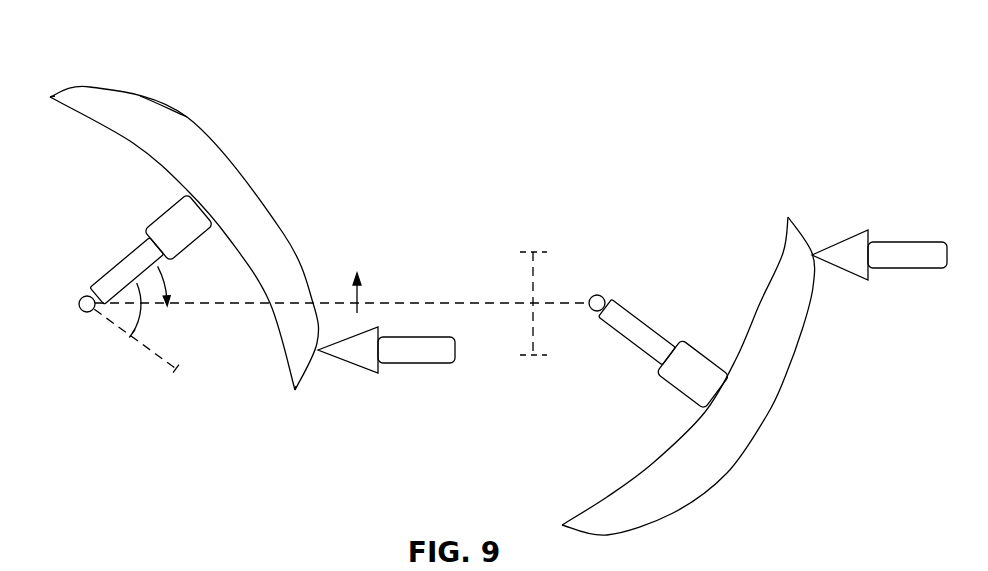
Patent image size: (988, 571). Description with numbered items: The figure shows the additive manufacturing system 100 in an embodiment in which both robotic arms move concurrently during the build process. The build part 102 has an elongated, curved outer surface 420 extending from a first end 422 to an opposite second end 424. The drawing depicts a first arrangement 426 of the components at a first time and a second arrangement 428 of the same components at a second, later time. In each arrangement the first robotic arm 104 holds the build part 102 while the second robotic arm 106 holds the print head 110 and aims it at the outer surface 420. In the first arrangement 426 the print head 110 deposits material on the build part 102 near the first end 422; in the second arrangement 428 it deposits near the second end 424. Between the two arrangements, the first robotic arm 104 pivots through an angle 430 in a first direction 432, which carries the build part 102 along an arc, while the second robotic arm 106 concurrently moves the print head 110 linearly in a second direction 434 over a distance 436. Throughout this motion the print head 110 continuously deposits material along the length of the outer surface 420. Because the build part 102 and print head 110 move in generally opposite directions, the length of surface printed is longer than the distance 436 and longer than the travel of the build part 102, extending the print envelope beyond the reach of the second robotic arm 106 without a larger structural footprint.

The additive manufacturing system 100 is at (447, 80).
The build part 102 is at (128, 103).
The first robotic arm 104 is at (128, 263).
The second robotic arm 106 is at (425, 360).
The print head 110 is at (345, 358).
The outer surface 420 is at (187, 117).
The first end 422 is at (295, 390).
The second end 424 is at (50, 97).
The first arrangement 426 is at (313, 127).
The second arrangement 428 is at (717, 146).
The angle 430 is at (135, 323).
The first direction 432 is at (170, 282).
The second direction 434 is at (357, 295).
The distance 436 is at (533, 278).